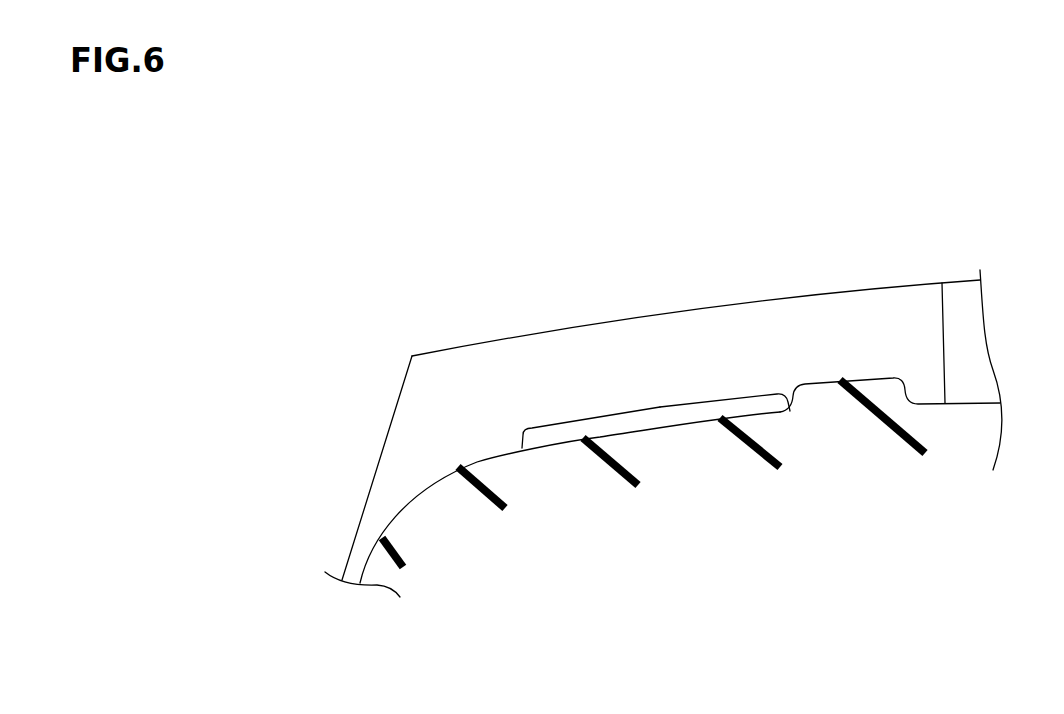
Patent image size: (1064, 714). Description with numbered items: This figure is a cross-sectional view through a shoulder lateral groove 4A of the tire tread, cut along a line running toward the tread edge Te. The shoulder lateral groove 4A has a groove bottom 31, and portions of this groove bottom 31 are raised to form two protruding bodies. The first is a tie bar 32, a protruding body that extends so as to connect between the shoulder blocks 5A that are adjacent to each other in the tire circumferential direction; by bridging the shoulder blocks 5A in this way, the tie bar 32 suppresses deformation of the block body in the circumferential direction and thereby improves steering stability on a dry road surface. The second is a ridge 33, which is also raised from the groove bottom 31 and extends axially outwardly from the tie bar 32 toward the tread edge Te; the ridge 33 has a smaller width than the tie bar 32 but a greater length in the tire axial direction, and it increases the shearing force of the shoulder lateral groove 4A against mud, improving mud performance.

The shoulder lateral groove 4A is at (600, 357).
The shoulder block 5A is at (723, 303).
The tread edge Te is at (412, 356).
The groove bottom 31 is at (560, 437).
The tie bar 32 is at (865, 380).
The ridge 33 is at (697, 400).